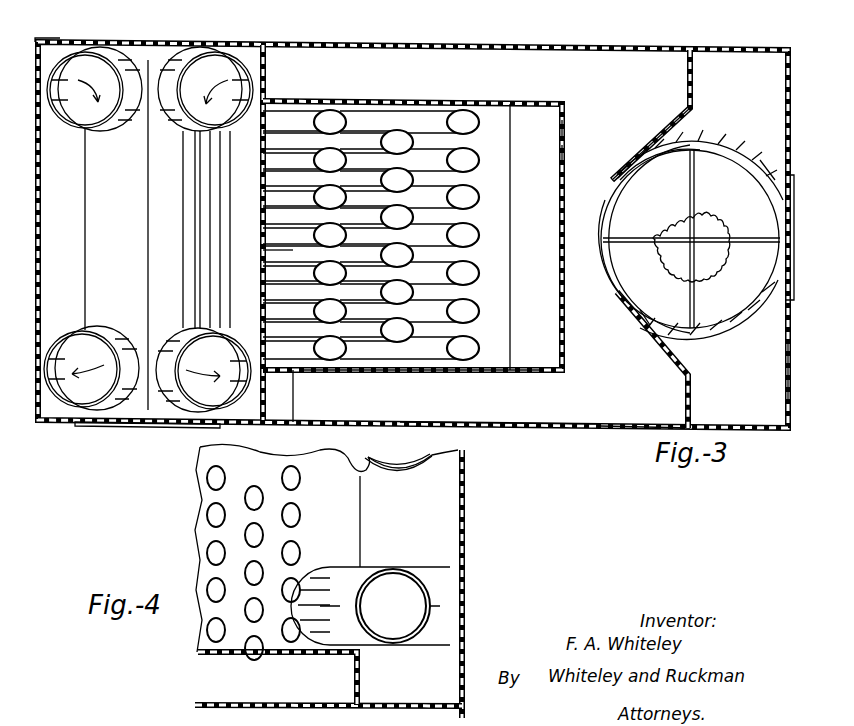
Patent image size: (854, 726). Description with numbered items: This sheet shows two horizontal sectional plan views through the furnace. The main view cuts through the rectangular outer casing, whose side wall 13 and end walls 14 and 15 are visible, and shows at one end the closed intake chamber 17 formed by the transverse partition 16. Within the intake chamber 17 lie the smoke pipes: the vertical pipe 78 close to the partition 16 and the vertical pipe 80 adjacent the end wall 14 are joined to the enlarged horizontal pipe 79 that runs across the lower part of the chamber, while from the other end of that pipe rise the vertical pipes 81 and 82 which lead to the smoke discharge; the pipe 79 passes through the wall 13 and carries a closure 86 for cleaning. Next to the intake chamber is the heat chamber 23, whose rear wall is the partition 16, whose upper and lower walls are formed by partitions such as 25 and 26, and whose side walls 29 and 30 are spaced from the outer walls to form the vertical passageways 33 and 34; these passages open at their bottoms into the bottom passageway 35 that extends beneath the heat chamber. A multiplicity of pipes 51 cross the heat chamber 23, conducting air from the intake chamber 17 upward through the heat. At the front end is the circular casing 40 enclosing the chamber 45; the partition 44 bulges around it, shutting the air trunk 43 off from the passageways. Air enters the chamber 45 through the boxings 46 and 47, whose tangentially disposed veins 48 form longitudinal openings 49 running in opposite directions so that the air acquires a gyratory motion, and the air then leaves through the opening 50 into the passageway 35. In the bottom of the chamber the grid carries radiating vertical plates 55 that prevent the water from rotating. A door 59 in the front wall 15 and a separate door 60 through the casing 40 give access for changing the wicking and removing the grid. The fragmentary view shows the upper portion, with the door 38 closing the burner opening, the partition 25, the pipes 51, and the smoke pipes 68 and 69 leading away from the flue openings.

In FIG. 3, the side wall 13 is at (546, 424).
In FIG. 4, the side wall 13 is at (195, 690).
In FIG. 3, the end wall 14 is at (36, 40).
In FIG. 3, the end wall 15 is at (792, 360).
In FIG. 3, the transverse partition 16 is at (262, 252).
In FIG. 3, the intake chamber 17 is at (97, 235).
In FIG. 3, the heat chamber 23 is at (566, 130).
In FIG. 4, the upper wall partition 25 is at (345, 520).
In FIG. 3, the lower wall partition 26 is at (566, 152).
In FIG. 3, the side wall partition 29 is at (446, 101).
In FIG. 3, the side wall partition 30 is at (452, 371).
In FIG. 3, the vertical passageway 33 is at (335, 72).
In FIG. 3, the vertical passageway 34 is at (500, 420).
In FIG. 3, the bottom passageway 35 is at (575, 360).
In FIG. 4, the door 38 is at (466, 553).
In FIG. 3, the circular casing 40 is at (770, 200).
In FIG. 3, the air trunk 43 is at (722, 72).
In FIG. 4, the air trunk 43 is at (446, 690).
In FIG. 3, the partition 44 is at (658, 134).
In FIG. 3, the chamber 45 is at (632, 282).
In FIG. 3, the boxing 46 is at (730, 340).
In FIG. 3, the boxing 47 is at (728, 155).
In FIG. 3, the veins 48 is at (690, 145).
In FIG. 3, the longitudinal openings 49 is at (760, 190).
In FIG. 3, the opening 50 is at (610, 284).
In FIG. 3, the pipes 51 is at (420, 140).
In FIG. 4, the pipes 51 is at (291, 632).
In FIG. 3, the radiating vertical plates 55 is at (620, 205).
In FIG. 3, the door 59 is at (790, 298).
In FIG. 3, the door 60 is at (775, 230).
In FIG. 4, the smoke pipe 68 is at (402, 472).
In FIG. 4, the smoke pipe 69 is at (430, 612).
In FIG. 3, the vertical pipe 78 is at (182, 62).
In FIG. 3, the enlarged horizontal pipe 79 is at (96, 170).
In FIG. 3, the vertical pipe 80 is at (126, 60).
In FIG. 3, the vertical pipe 81 is at (172, 346).
In FIG. 3, the vertical pipe 82 is at (72, 335).
In FIG. 3, the closure 86 is at (132, 425).